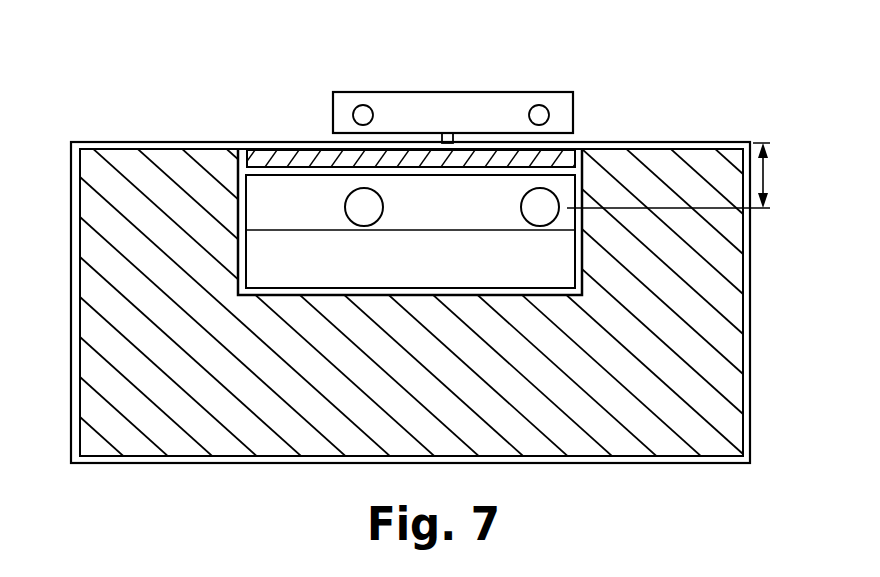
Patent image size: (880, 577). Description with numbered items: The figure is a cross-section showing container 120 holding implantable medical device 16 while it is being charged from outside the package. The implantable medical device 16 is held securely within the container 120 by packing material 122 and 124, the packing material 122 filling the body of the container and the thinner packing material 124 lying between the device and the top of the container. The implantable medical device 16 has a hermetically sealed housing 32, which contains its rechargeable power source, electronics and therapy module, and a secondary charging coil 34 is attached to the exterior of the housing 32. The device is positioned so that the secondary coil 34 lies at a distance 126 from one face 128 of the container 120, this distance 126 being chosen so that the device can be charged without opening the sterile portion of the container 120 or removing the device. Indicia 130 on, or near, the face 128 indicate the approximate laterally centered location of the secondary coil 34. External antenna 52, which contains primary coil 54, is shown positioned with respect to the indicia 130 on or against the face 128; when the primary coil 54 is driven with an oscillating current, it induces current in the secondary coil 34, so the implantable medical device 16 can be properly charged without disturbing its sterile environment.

The face 128 is at (91, 141).
The packing material 124 is at (240, 160).
The implantable medical device 16 is at (292, 207).
The secondary charging coil 34 is at (357, 202).
The primary coil 54 is at (363, 106).
The indicia 130 is at (450, 133).
The external antenna 52 is at (490, 92).
The distance 126 is at (768, 177).
The housing 32 is at (255, 267).
The container 120 is at (677, 338).
The packing material 122 is at (658, 442).